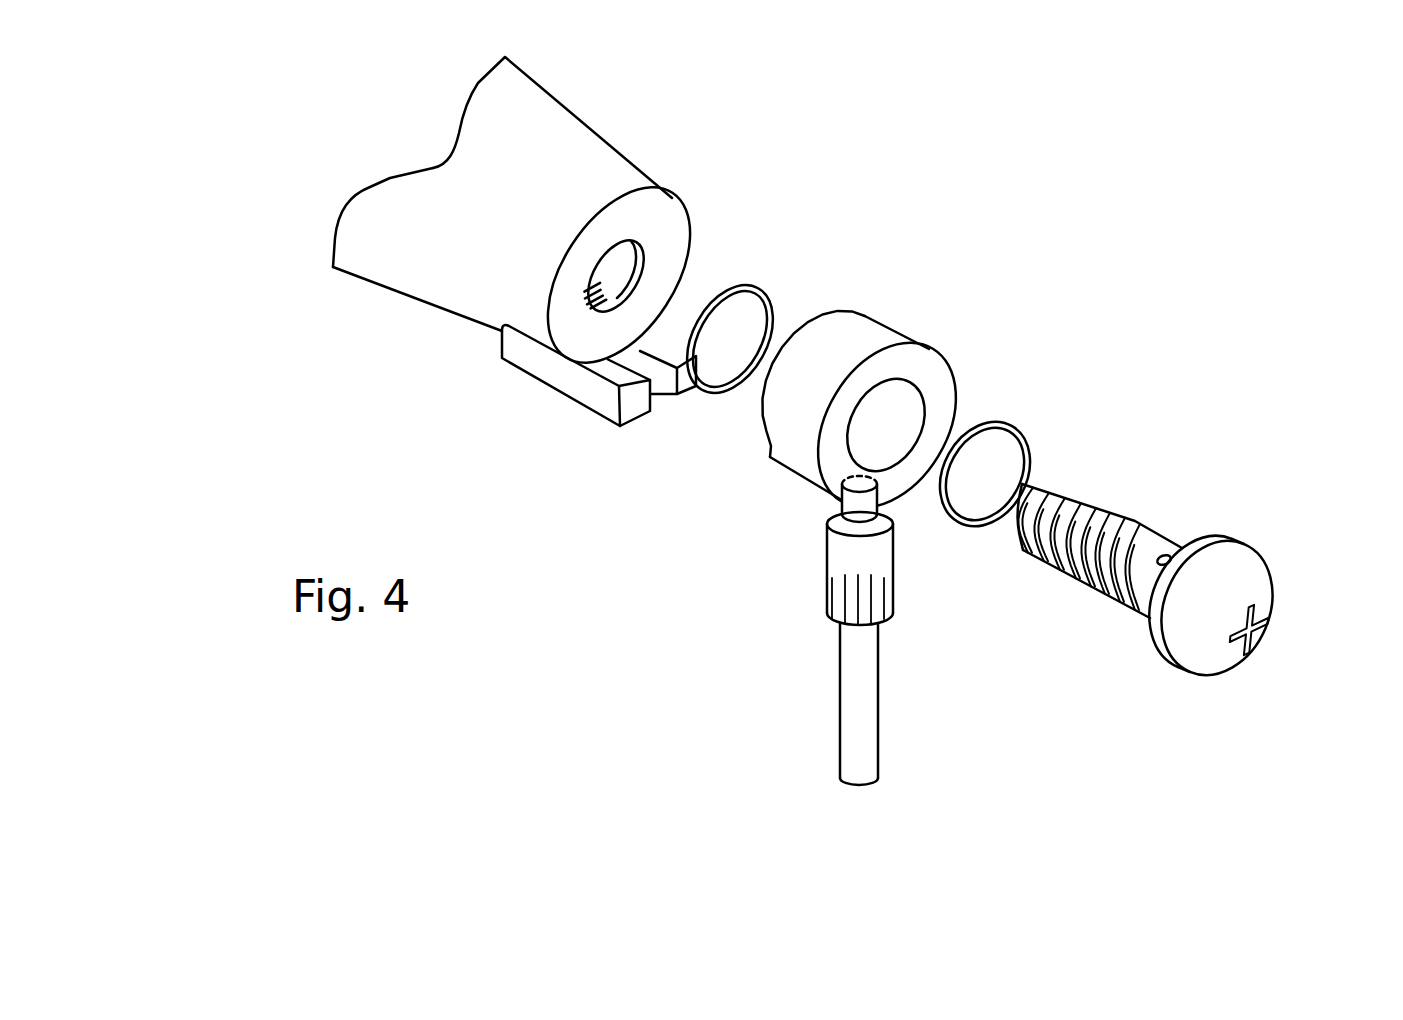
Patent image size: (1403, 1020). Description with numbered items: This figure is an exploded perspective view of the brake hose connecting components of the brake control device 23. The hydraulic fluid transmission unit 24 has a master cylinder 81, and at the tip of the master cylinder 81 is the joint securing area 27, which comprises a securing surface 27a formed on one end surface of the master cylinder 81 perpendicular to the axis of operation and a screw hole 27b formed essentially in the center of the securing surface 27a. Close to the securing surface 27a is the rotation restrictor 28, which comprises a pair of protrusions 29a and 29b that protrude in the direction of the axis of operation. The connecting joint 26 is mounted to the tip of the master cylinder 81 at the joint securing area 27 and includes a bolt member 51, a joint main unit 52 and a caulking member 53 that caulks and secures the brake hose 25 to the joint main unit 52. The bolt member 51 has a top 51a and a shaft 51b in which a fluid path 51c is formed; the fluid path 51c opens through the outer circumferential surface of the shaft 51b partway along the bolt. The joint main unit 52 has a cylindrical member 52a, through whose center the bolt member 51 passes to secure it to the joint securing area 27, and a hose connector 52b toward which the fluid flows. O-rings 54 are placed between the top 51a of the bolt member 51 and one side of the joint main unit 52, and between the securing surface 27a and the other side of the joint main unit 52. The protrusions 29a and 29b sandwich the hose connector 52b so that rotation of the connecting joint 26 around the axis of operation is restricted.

The brake control device 23 is at (386, 309).
The hydraulic fluid transmission unit 24 is at (546, 139).
The master cylinder 81 is at (583, 158).
The joint securing area 27 is at (700, 256).
The securing surface 27a is at (655, 208).
The screw hole 27b is at (640, 278).
The rotation restrictor 28 is at (599, 441).
The protrusion 29a is at (583, 393).
The protrusion 29b is at (665, 380).
The O-ring 54 is at (772, 310).
The connecting joint 26 is at (868, 422).
The joint main unit 52 is at (868, 415).
The cylindrical member 52a is at (895, 333).
The hose connector 52b is at (855, 518).
The caulking member 53 is at (883, 562).
The brake hose 25 is at (863, 716).
The bolt member 51 is at (1110, 513).
The top of the bolt member 51a is at (1248, 573).
The shaft 51b is at (1166, 557).
The fluid path 51c is at (1187, 553).